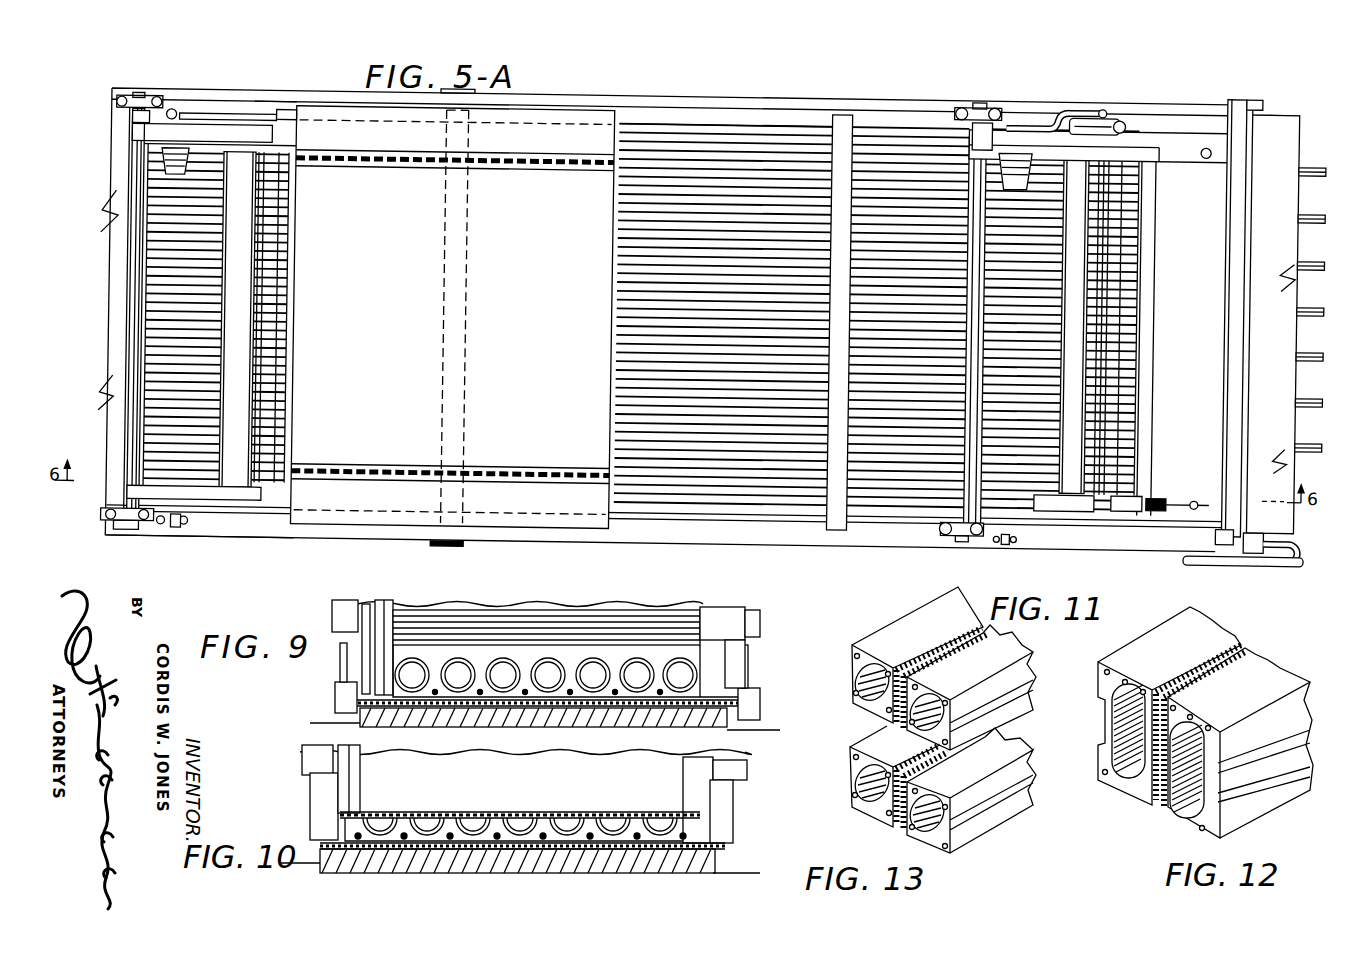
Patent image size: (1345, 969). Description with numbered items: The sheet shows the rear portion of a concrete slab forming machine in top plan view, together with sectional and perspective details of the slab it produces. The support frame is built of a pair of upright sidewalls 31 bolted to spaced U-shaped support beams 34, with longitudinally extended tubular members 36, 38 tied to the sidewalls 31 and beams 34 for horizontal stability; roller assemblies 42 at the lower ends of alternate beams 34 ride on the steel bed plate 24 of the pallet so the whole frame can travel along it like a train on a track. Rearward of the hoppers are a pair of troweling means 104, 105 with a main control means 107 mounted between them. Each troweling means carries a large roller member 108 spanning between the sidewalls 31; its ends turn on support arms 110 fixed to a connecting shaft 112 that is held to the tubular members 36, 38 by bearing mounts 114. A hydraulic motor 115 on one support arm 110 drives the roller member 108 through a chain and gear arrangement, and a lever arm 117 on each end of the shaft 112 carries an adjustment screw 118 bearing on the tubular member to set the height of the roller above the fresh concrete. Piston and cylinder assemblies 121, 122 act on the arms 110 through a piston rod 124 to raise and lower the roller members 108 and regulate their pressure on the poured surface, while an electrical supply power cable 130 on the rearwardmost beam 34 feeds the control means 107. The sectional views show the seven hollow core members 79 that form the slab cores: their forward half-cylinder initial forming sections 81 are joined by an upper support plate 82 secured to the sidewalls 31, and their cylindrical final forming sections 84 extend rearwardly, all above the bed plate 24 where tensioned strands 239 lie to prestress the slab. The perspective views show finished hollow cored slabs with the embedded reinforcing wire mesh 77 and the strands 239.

In FIG. 9, the bed plate 24 is at (642, 702).
In FIG. 10, the bed plate 24 is at (693, 850).
In FIG. 9, the sidewall 31 is at (746, 618).
In FIG. 5-A, the support beam 34 is at (848, 117).
In FIG. 5-A, the tubular member 36 is at (228, 531).
In FIG. 5-A, the tubular member 38 is at (718, 104).
In FIG. 9, the roller assembly 42 is at (335, 688).
In FIG. 11, the reinforcing wire mesh 77 is at (856, 643).
In FIG. 13, the reinforcing wire mesh 77 is at (931, 792).
In FIG. 12, the reinforcing wire mesh 77 is at (1205, 710).
In FIG. 5-A, the core member 79 is at (627, 305).
In FIG. 9, the core member 79 is at (528, 645).
In FIG. 10, the core member 79 is at (712, 838).
In FIG. 10, the initial forming section 81 is at (525, 849).
In FIG. 10, the upper support plate 82 is at (538, 812).
In FIG. 5-A, the final forming section 84 is at (680, 204).
In FIG. 9, the final forming section 84 is at (640, 650).
In FIG. 5-A, the troweling means 104 is at (263, 100).
In FIG. 5-A, the troweling means 105 is at (1113, 97).
In FIG. 5-A, the main control means 107 is at (584, 102).
In FIG. 5-A, the roller member 108 is at (253, 266).
In FIG. 9, the roller member 108 is at (442, 628).
In FIG. 5-A, the support arm 110 is at (203, 133).
In FIG. 5-A, the connecting shaft 112 is at (133, 250).
In FIG. 5-A, the bearing mount 114 is at (132, 93).
In FIG. 5-A, the hydraulic motor 115 is at (172, 152).
In FIG. 5-A, the lever arm 117 is at (160, 527).
In FIG. 5-A, the adjustment screw 118 is at (188, 527).
In FIG. 5-A, the piston and cylinder assembly 121 is at (270, 108).
In FIG. 5-A, the piston and cylinder assembly 122 is at (1126, 110).
In FIG. 5-A, the piston rod 124 is at (167, 110).
In FIG. 5-A, the electrical supply power cable 130 is at (1283, 549).
In FIG. 5-A, the strand 239 is at (1313, 292).
In FIG. 9, the strand 239 is at (662, 694).
In FIG. 10, the strand 239 is at (594, 840).
In FIG. 11, the strand 239 is at (937, 703).
In FIG. 13, the strand 239 is at (952, 853).
In FIG. 12, the strand 239 is at (1106, 776).